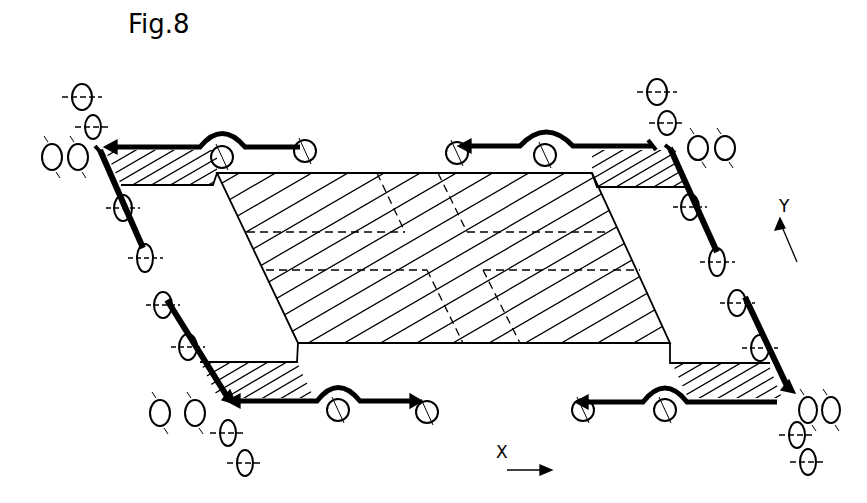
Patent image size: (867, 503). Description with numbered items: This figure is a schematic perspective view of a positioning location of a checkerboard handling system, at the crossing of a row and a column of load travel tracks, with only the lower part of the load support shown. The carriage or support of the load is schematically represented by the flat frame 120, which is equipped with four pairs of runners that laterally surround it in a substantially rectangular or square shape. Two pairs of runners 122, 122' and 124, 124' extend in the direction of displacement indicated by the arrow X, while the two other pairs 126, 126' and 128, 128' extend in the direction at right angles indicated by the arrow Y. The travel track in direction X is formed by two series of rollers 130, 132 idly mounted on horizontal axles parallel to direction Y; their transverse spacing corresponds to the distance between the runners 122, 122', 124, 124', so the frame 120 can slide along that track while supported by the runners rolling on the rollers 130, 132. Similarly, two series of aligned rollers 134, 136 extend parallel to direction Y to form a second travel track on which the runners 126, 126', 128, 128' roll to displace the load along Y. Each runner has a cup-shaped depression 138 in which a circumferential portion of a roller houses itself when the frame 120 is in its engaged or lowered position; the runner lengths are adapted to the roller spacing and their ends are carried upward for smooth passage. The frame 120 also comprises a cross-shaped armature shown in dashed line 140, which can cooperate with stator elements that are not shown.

The frame 120 is at (387, 198).
The runner 122 is at (212, 117).
The runner 122' is at (332, 434).
The runner 124 is at (551, 118).
The runner 124' is at (674, 434).
The runner 126 is at (712, 210).
The runner 126' is at (113, 209).
The runner 128 is at (757, 325).
The runner 128' is at (181, 348).
The rollers 130 is at (725, 137).
The rollers 132 is at (797, 410).
The rollers 134 is at (97, 117).
The rollers 136 is at (672, 115).
The cup-shaped depression 138 is at (218, 133).
The cross-shaped armature 140 is at (615, 246).